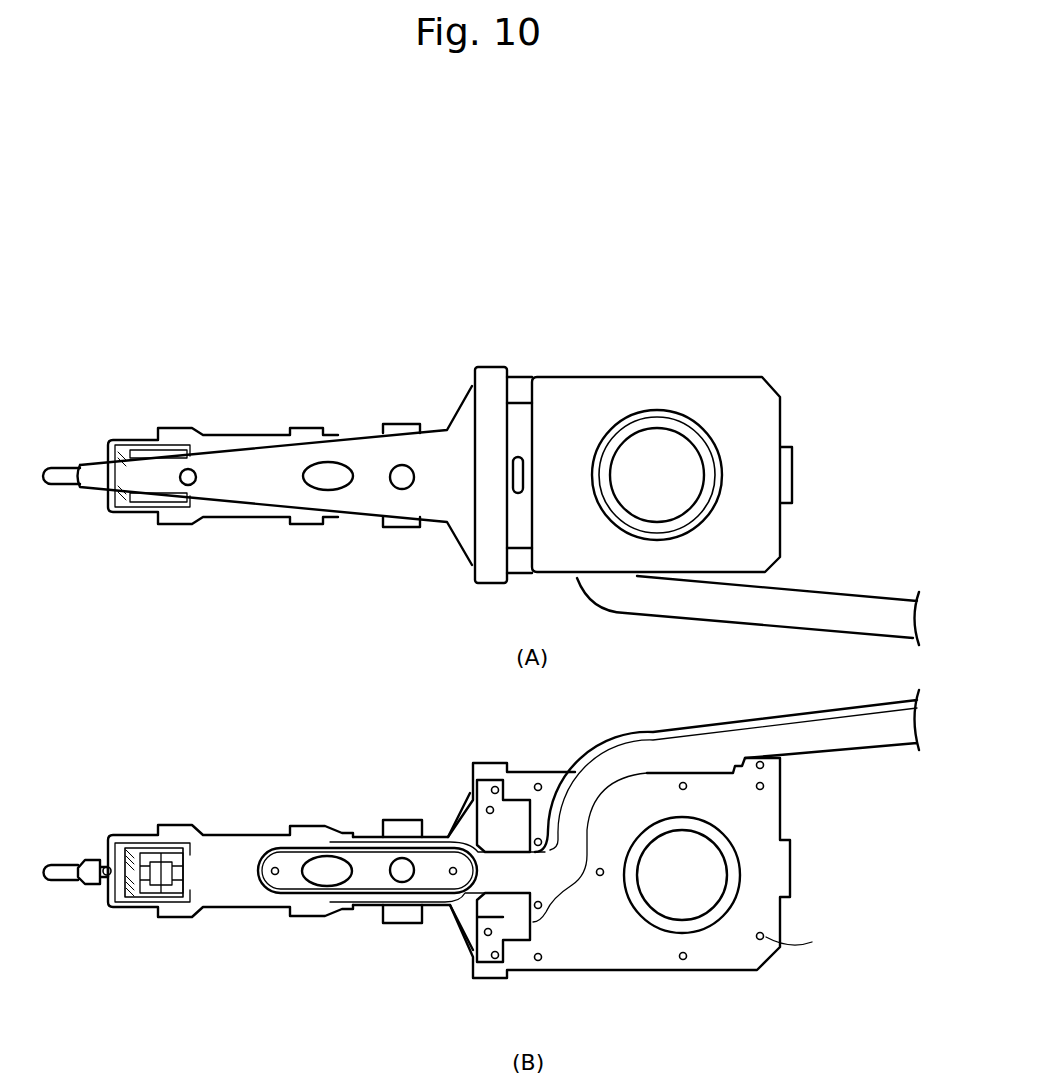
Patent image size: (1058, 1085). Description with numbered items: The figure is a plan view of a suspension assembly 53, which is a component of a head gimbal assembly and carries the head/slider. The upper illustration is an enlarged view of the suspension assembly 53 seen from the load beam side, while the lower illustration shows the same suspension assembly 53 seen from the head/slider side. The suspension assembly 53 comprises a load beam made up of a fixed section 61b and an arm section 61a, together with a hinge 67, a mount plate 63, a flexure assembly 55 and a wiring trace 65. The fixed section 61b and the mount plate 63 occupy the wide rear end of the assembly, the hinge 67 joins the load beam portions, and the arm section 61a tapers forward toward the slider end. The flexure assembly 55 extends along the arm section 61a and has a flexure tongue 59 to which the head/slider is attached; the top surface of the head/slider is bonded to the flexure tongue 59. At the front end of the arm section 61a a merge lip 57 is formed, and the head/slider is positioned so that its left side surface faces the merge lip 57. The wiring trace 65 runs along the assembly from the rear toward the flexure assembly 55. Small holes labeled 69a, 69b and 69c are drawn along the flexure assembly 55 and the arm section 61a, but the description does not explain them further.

The suspension assembly 53 is at (673, 411).
The flexure assembly 55 is at (245, 424).
The merge lip 57 is at (63, 466).
The flexure tongue 59 is at (145, 848).
The arm section 61a is at (437, 440).
The fixed section 61b is at (770, 416).
The mount plate 63 is at (656, 410).
The wiring trace 65 is at (832, 602).
The hinge 67 is at (619, 955).
The hole 69a is at (106, 867).
The hole 69b is at (274, 868).
The hole 69c is at (453, 876).